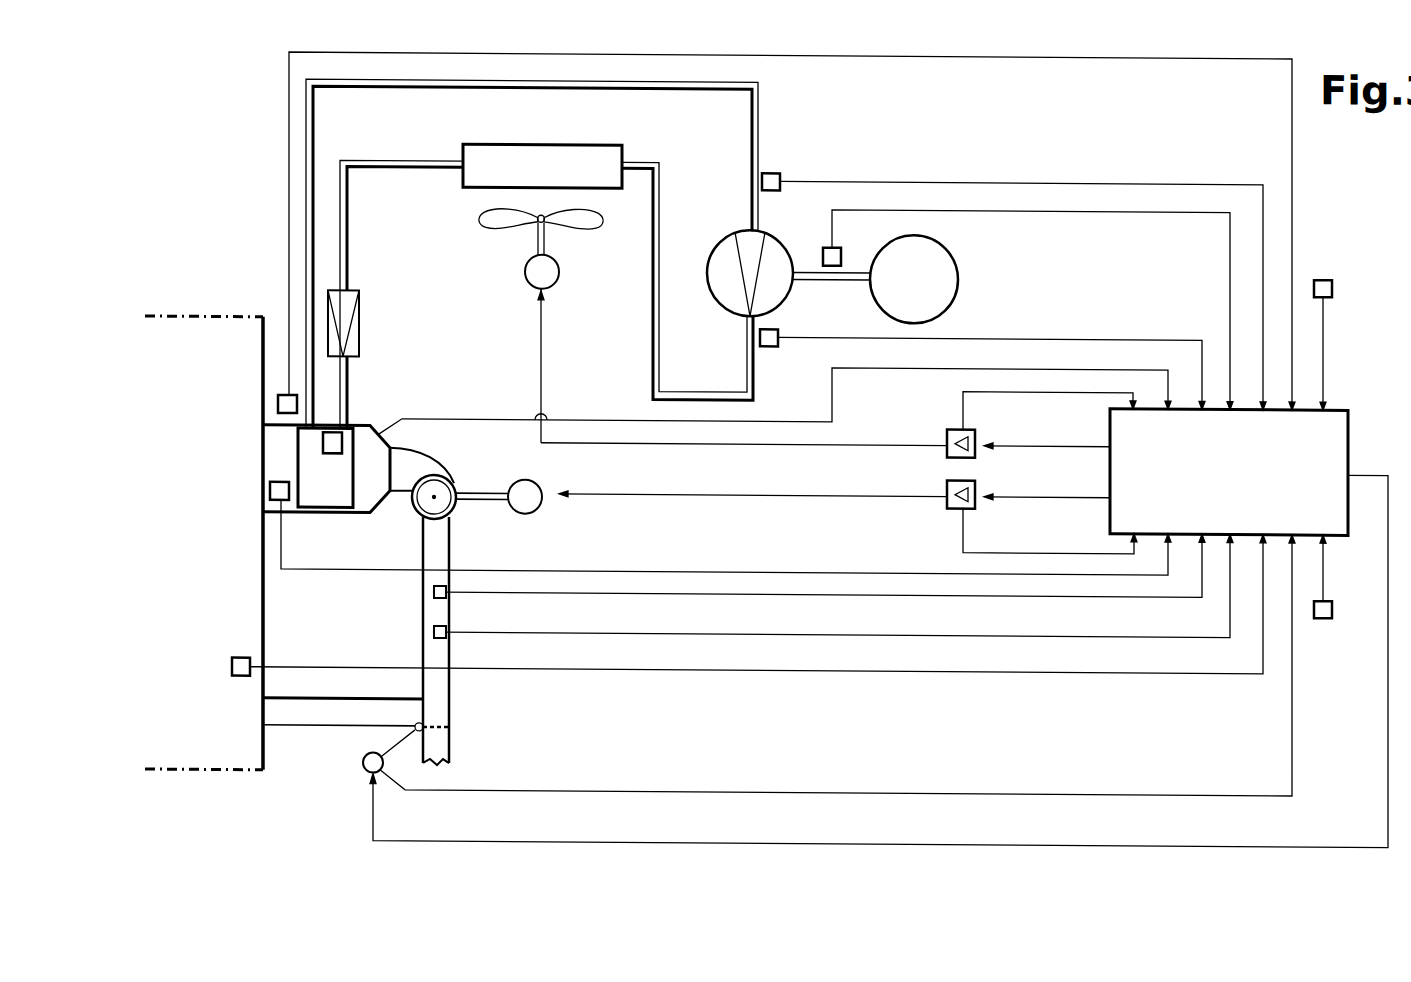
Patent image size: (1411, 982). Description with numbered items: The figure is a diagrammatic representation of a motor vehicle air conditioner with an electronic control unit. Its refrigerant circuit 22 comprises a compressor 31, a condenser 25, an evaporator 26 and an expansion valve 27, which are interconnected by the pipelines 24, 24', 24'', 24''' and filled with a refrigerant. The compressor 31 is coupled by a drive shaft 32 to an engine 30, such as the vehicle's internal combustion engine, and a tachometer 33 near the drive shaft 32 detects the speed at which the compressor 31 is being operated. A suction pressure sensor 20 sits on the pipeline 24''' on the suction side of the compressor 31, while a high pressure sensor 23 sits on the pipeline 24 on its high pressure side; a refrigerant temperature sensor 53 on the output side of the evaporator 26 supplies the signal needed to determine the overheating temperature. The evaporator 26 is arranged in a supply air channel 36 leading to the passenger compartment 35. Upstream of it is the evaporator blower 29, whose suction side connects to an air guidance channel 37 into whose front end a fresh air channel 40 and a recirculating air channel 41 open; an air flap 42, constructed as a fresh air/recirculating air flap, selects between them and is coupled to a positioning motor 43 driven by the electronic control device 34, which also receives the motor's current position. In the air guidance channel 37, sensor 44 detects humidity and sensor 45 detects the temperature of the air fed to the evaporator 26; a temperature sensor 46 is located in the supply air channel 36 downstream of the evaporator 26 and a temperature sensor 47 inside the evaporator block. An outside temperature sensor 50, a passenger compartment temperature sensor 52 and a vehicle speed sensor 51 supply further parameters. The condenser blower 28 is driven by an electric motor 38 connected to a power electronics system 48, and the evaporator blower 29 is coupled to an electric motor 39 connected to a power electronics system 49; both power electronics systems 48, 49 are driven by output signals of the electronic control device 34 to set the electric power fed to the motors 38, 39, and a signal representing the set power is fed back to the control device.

The suction pressure sensor 20 is at (772, 170).
The refrigerant circuit 22 is at (770, 82).
The high pressure sensor 23 is at (775, 346).
The pipeline 24 is at (667, 281).
The pipeline 24' is at (401, 198).
The pipeline 24'' is at (401, 359).
The pipeline 24''' is at (260, 122).
The condenser 25 is at (612, 154).
The evaporator 26 is at (305, 457).
The expansion valve 27 is at (356, 333).
The condenser blower 28 is at (492, 220).
The evaporator blower 29 is at (452, 480).
The engine 30 is at (950, 300).
The compressor 31 is at (720, 253).
The drive shaft 32 is at (827, 283).
The tachometer 33 is at (832, 244).
The electronic control device 34 is at (1229, 486).
The passenger compartment 35 is at (144, 598).
The supply air channel 36 is at (360, 503).
The air guidance channel 37 is at (442, 656).
The electric motor 38 is at (526, 272).
The electric motor 39 is at (528, 512).
The fresh air channel 40 is at (442, 748).
The recirculating air channel 41 is at (310, 718).
The air flap 42 is at (432, 720).
The positioning motor 43 is at (365, 768).
The sensor 44 is at (434, 631).
The sensor 45 is at (434, 591).
The temperature sensor 46 is at (270, 491).
The temperature sensor 47 is at (323, 442).
The power electronics system 48 is at (947, 436).
The power electronics system 49 is at (947, 503).
The outside temperature sensor 50 is at (1320, 273).
The vehicle speed sensor 51 is at (1322, 620).
The passenger compartment temperature sensor 52 is at (232, 667).
The refrigerant temperature sensor 53 is at (278, 404).